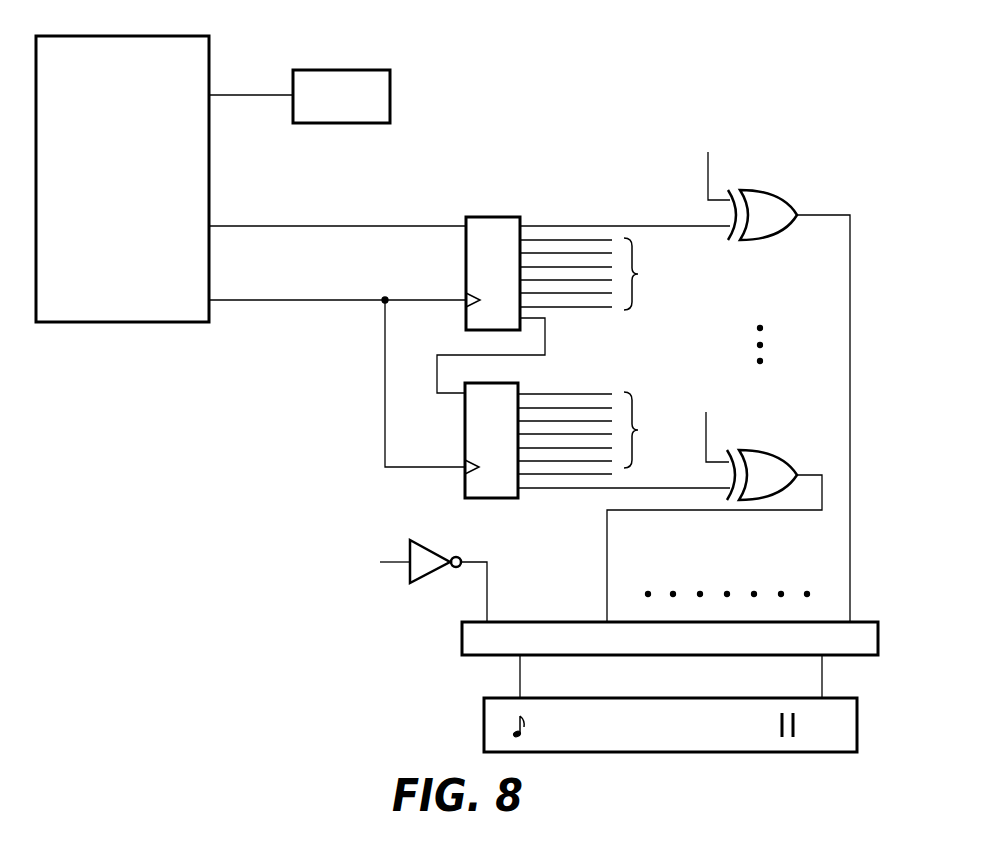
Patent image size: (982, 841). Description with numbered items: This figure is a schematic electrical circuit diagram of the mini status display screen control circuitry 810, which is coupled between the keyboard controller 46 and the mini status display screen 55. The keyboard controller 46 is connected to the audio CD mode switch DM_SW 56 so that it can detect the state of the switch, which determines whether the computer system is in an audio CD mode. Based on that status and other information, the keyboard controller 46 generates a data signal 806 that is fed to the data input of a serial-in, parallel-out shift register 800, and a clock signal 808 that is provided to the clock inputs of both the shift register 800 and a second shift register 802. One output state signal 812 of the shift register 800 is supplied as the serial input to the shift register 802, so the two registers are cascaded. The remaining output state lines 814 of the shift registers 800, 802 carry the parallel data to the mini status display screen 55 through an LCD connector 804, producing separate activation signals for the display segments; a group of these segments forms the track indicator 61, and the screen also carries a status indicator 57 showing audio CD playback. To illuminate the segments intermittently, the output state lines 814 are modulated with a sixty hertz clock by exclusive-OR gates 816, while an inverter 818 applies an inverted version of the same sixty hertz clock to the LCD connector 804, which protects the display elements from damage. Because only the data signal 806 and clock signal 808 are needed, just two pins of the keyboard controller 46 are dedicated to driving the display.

The keyboard controller 46 is at (193, 36).
The audio CD mode switch DM_SW 56 is at (378, 70).
The data signal 806 is at (366, 226).
The clock signal 808 is at (373, 300).
The shift register 800 is at (473, 270).
The shift register 802 is at (472, 436).
The output state signal 812 is at (545, 347).
The output state lines 814 is at (599, 356).
The exclusive-OR gates 816 is at (772, 192).
The inverter 818 is at (428, 546).
The LCD connector 804 is at (546, 622).
The mini status display screen 55 is at (494, 698).
The status indicator 57 is at (532, 728).
The track indicator 61 is at (776, 727).
The mini status display screen control circuitry 810 is at (698, 66).